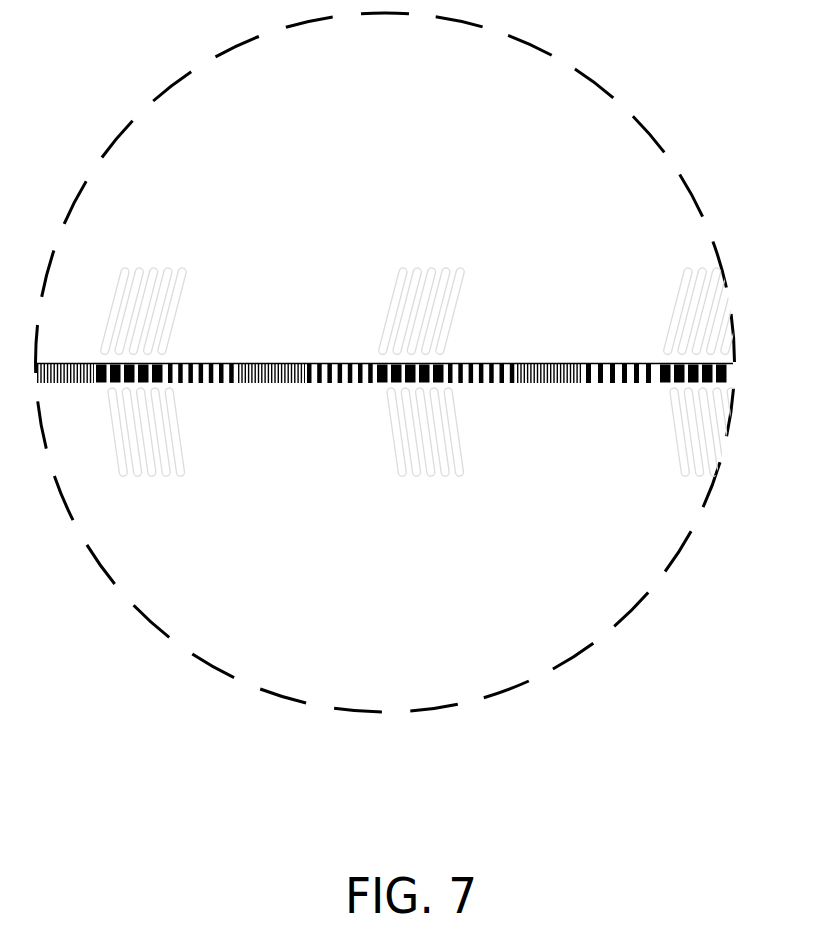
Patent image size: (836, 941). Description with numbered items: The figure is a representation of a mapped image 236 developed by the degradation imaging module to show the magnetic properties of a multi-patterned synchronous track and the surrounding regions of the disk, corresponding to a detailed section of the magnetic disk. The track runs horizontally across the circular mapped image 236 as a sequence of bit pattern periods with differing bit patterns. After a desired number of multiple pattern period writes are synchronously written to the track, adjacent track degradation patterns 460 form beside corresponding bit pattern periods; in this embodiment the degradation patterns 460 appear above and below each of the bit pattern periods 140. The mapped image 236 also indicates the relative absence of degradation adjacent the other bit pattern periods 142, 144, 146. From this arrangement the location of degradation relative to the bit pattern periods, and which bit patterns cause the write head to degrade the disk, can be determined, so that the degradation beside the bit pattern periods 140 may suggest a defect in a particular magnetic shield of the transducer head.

The mapped image 236 is at (613, 75).
The adjacent track degradation patterns 460 is at (107, 317).
The bit pattern periods 140 is at (103, 389).
The bit pattern periods 142 is at (189, 356).
The bit pattern periods 144 is at (268, 356).
The bit pattern periods 146 is at (325, 389).